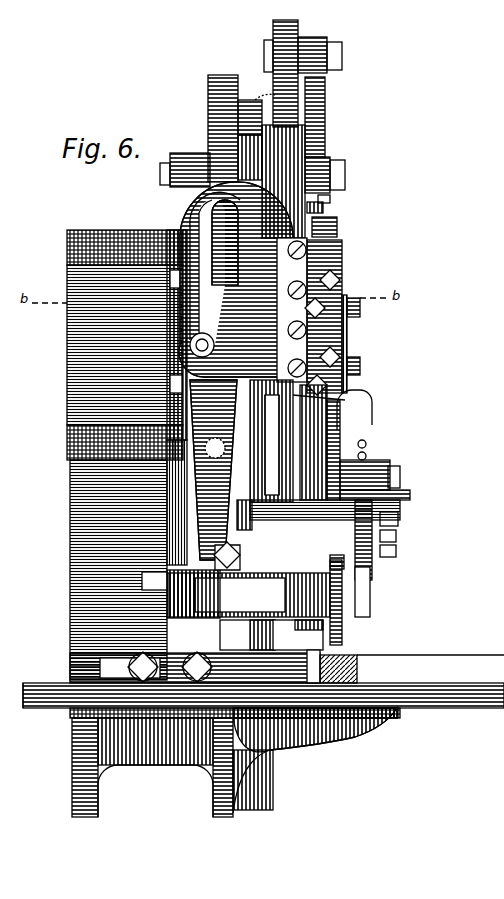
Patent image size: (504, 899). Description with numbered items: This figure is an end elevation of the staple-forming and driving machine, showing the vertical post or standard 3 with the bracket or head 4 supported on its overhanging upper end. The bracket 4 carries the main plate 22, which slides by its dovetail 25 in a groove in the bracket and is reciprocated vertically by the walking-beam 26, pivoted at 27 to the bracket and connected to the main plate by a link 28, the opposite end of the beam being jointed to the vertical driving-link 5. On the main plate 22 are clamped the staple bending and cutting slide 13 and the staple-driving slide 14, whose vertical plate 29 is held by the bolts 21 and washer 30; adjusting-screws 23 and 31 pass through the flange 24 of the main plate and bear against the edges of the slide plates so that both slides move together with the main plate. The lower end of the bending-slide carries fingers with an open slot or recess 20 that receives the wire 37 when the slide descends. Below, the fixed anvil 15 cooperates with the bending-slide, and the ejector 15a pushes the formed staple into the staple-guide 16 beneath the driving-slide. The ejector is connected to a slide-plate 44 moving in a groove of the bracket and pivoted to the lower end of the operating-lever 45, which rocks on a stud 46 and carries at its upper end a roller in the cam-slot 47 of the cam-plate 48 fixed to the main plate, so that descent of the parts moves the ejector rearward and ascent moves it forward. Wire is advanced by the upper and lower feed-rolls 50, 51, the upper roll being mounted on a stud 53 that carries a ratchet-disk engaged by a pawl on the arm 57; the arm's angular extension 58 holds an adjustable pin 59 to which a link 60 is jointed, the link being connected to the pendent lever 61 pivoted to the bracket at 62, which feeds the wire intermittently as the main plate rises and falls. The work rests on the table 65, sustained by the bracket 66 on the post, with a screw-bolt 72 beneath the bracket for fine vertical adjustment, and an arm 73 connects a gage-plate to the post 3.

The vertical post or standard 3 is at (114, 455).
The bracket or head 4 is at (238, 75).
The driving-link 5 is at (247, 635).
The staple bending and cutting slide 13 is at (181, 594).
The staple-driving slide 14 is at (381, 493).
The anvil 15 is at (299, 635).
The ejector 15a is at (342, 570).
The staple-guide 16 is at (249, 595).
The open slot or recess 20 is at (340, 440).
The bolts 21 is at (360, 310).
The main plate 22 is at (300, 148).
The adjusting-screws 23 is at (325, 308).
The flange 24 is at (330, 244).
The dovetail 25 is at (323, 200).
The walking-beam 26 is at (298, 30).
The pivot 27 is at (250, 110).
The link 28 is at (325, 104).
The vertical plate 29 is at (345, 400).
The washer 30 is at (350, 333).
The adjusting-screws 31 is at (340, 280).
The wire 37 is at (364, 594).
The slide-plate 44 is at (266, 485).
The operating-lever 45 is at (213, 470).
The stud 46 is at (372, 412).
The cam-slot 47 is at (236, 279).
The cam-plate 48 is at (240, 232).
The upper feed-roll 50 is at (365, 475).
The lower feed-roll 51 is at (396, 552).
The stud 53 is at (402, 477).
The arm 57 is at (368, 450).
The angular extension 58 is at (344, 562).
The pin 59 is at (396, 536).
The link 60 is at (398, 520).
The pendent lever 61 is at (240, 510).
The pivot 62 is at (242, 183).
The table 65 is at (380, 698).
The bracket 66 is at (234, 762).
The screw-bolt 72 is at (345, 655).
The arm 73 is at (80, 668).